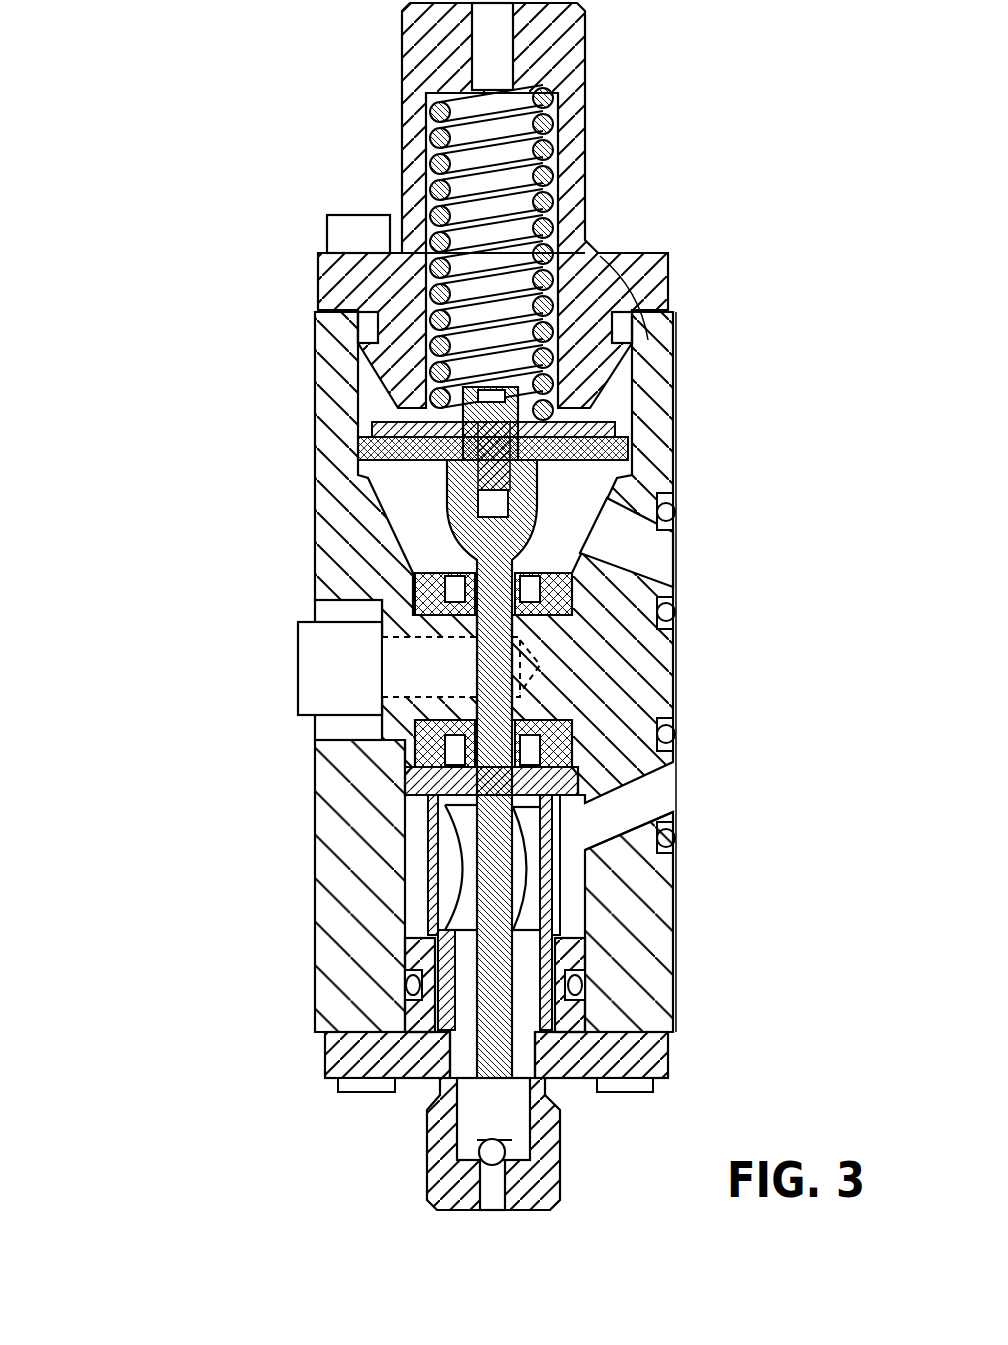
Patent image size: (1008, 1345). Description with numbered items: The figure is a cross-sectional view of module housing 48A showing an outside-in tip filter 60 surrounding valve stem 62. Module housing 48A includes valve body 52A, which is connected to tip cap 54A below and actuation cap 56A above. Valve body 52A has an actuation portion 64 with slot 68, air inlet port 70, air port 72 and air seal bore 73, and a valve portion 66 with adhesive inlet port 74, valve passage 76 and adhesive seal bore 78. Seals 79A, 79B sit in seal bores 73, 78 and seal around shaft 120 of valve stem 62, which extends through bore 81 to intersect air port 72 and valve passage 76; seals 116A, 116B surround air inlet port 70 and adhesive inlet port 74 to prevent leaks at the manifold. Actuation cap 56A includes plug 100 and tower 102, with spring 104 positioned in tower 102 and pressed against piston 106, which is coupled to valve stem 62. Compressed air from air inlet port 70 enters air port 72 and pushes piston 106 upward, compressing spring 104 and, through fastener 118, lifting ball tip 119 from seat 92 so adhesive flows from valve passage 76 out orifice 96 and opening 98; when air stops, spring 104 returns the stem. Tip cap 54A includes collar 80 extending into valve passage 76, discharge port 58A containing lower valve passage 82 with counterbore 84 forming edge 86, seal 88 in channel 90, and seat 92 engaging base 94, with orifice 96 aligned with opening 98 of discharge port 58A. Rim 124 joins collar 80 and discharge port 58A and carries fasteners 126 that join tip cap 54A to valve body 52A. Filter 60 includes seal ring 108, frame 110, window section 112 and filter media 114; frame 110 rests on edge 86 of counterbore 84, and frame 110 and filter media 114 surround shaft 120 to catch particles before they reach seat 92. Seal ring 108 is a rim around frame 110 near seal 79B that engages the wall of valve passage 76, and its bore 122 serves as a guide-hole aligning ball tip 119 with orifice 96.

The module housing 48A is at (195, 498).
The valve body 52A is at (303, 940).
The tip cap 54A is at (432, 1099).
The actuation cap 56A is at (398, 45).
The discharge port 58A is at (433, 1150).
The tip filter 60 is at (588, 915).
The valve stem 62 is at (530, 632).
The actuation portion 64 is at (303, 490).
The valve portion 66 is at (303, 868).
The slot 68 is at (318, 606).
The air inlet port 70 is at (655, 558).
The air port 72 is at (440, 575).
The air seal bore 73 is at (572, 567).
The adhesive inlet port 74 is at (655, 800).
The valve passage 76 is at (405, 893).
The adhesive seal bore 78 is at (575, 745).
The seal 79A is at (548, 582).
The seal 79B is at (555, 722).
The collar 80 is at (683, 977).
The bore 81 is at (482, 600).
The lower valve passage 82 is at (500, 1152).
The counterbore 84 is at (430, 1040).
The edge 86 is at (600, 1050).
The seal 88 is at (580, 992).
The channel 90 is at (578, 975).
The seat 92 is at (466, 1198).
The base 94 is at (528, 1192).
The orifice 96 is at (490, 1185).
The opening 98 is at (483, 1200).
The plug 100 is at (660, 262).
The tower 102 is at (580, 75).
The spring 104 is at (465, 150).
The piston 106 is at (580, 445).
The seal ring 108 is at (420, 783).
The frame 110 is at (460, 1013).
The window section 112 is at (442, 860).
The filter media 114 is at (587, 880).
The seal 116A is at (670, 512).
The seal 116B is at (672, 735).
The fastener 118 is at (488, 465).
The ball tip 119 is at (515, 1195).
The shaft 120 is at (492, 660).
The bore 122 is at (468, 703).
The rim 124 is at (645, 1035).
The fasteners 126 is at (362, 1092).